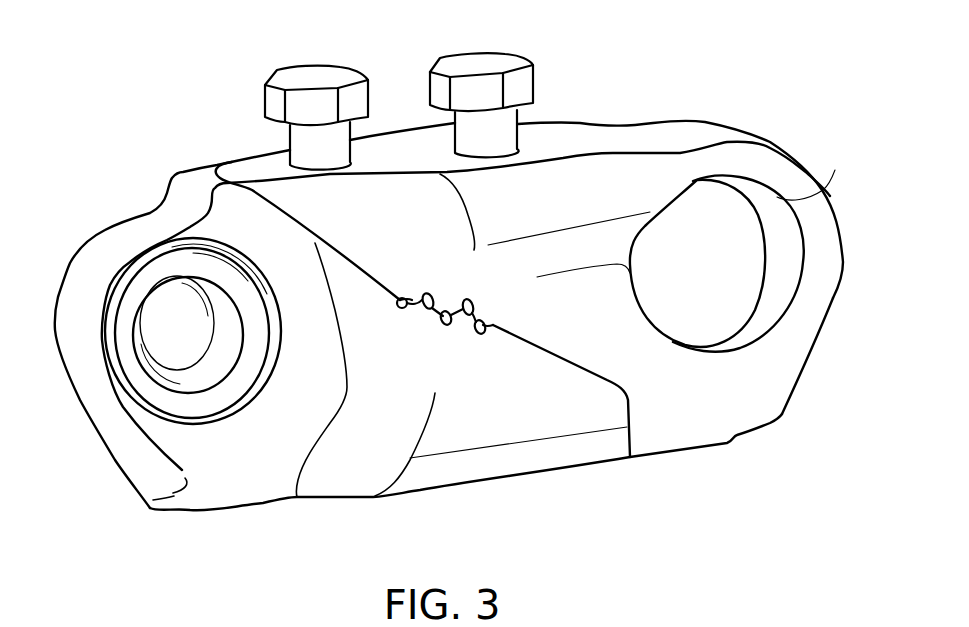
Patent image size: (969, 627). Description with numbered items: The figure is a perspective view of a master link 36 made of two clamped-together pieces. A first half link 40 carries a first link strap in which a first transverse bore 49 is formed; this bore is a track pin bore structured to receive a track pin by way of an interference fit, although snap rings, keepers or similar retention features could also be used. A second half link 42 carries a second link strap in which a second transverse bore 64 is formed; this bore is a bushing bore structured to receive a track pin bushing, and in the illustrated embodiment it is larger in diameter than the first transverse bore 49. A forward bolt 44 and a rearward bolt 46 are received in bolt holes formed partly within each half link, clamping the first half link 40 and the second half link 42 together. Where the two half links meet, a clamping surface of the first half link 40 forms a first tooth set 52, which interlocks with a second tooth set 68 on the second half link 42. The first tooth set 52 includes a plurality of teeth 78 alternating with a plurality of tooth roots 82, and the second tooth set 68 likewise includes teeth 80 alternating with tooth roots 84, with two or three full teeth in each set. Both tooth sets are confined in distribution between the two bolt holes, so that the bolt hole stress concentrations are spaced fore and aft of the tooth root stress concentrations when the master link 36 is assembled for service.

The master link 36 is at (765, 96).
The first half link 40 is at (147, 467).
The second half link 42 is at (800, 340).
The forward bolt 44 is at (295, 78).
The rearward bolt 46 is at (498, 63).
The first transverse bore 49 is at (140, 339).
The first tooth set 52 is at (477, 278).
The second transverse bore 64 is at (782, 218).
The second tooth set 68 is at (472, 355).
The teeth 78 is at (432, 302).
The teeth 80 is at (434, 314).
The tooth roots 82 is at (398, 302).
The tooth roots 84 is at (414, 300).